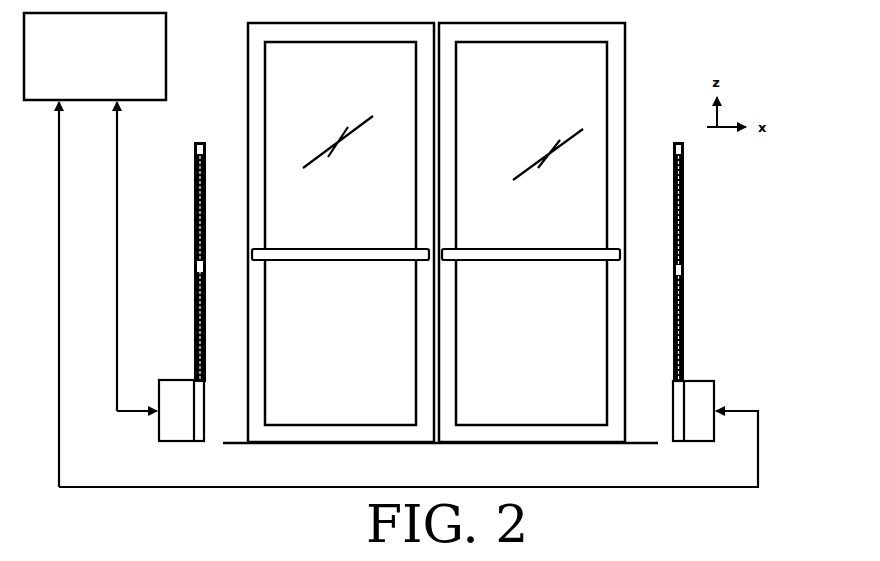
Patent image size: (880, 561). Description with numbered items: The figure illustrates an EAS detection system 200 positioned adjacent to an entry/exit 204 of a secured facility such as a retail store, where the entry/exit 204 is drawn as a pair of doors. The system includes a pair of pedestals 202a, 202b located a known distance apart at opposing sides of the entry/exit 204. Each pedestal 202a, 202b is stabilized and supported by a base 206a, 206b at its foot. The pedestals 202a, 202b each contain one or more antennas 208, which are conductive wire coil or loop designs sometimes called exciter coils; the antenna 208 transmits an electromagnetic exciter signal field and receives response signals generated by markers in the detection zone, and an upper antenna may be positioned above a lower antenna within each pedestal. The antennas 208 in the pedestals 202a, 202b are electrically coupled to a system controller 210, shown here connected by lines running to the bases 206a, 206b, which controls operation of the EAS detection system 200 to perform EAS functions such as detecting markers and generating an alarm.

The EAS detection system 200 is at (700, 42).
The pedestal 202a is at (182, 176).
The pedestal 202b is at (698, 196).
The entry/exit 204 is at (626, 103).
The base 206a is at (176, 380).
The base 206b is at (690, 381).
The antenna 208 is at (192, 258).
The system controller 210 is at (391, 250).